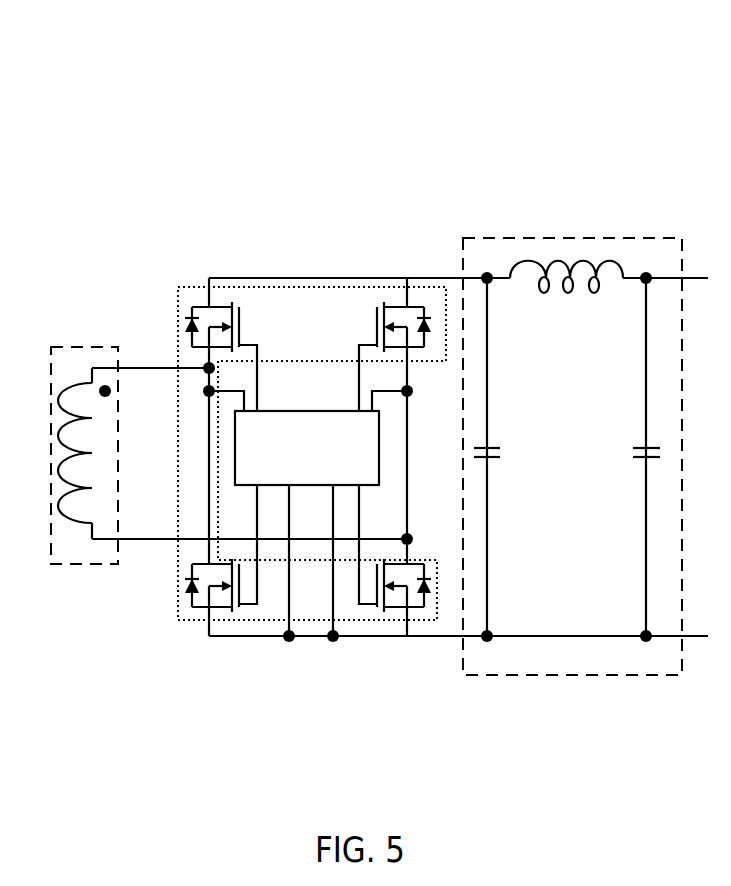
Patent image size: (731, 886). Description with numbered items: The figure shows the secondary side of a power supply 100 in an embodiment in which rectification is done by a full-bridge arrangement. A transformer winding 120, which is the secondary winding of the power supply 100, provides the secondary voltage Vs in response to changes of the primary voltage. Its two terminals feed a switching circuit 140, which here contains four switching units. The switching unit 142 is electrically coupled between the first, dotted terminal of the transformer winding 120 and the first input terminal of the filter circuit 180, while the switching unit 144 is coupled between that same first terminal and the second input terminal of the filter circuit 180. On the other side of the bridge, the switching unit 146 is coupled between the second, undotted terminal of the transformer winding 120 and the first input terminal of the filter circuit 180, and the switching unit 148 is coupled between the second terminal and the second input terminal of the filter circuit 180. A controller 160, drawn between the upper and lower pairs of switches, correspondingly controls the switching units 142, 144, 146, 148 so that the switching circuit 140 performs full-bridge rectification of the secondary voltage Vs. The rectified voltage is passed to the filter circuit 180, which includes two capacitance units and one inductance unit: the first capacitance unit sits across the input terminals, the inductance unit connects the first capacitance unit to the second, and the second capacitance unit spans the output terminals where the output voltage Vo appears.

The power supply 100 is at (132, 36).
The transformer winding 120 is at (97, 346).
The switching circuit 140 is at (302, 286).
The switching unit 142 is at (241, 333).
The switching unit 144 is at (190, 602).
The switching unit 146 is at (374, 327).
The switching unit 148 is at (390, 609).
The controller 160 is at (288, 476).
The filter circuit 180 is at (587, 237).